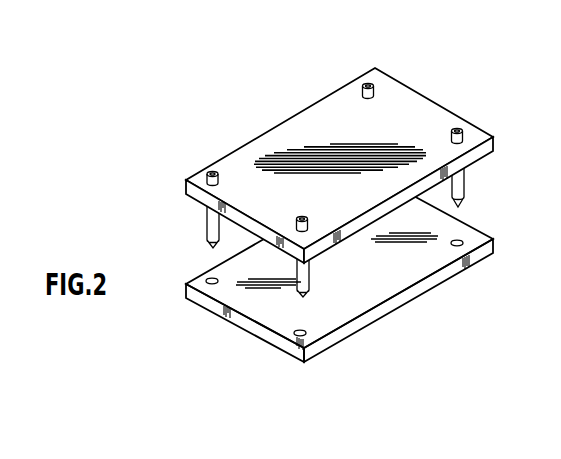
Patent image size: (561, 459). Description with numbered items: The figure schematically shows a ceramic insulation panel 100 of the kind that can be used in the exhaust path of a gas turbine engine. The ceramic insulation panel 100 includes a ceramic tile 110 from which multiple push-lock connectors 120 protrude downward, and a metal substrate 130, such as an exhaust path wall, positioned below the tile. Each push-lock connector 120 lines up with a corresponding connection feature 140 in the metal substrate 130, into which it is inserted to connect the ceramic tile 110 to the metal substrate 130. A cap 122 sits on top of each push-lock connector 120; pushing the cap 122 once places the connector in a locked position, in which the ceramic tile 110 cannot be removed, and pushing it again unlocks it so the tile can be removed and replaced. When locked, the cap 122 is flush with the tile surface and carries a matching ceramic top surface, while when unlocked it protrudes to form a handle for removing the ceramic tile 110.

The ceramic insulation panel 100 is at (277, 74).
The ceramic tile 110 is at (405, 122).
The push-lock connector 120 is at (206, 230).
The cap 122 is at (211, 172).
The metal substrate 130 is at (423, 285).
The connection feature 140 is at (207, 280).